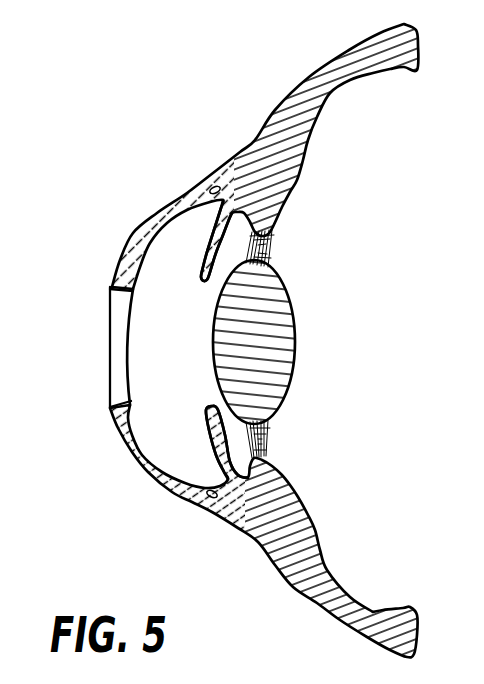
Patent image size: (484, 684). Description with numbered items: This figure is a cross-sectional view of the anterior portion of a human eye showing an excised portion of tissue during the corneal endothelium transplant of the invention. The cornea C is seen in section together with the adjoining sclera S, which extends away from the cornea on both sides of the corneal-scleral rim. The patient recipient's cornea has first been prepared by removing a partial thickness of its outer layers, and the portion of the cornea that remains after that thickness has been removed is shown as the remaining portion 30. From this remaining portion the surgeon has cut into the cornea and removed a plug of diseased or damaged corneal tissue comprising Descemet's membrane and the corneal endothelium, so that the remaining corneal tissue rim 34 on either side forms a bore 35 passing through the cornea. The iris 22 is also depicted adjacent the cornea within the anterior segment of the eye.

The remaining portion of the patient recipient's cornea 30 is at (124, 234).
The iris 22 is at (209, 221).
The sclera S is at (207, 188).
The cornea C is at (158, 218).
The corneal tissue rim 34 is at (132, 295).
The bore 35 is at (118, 343).